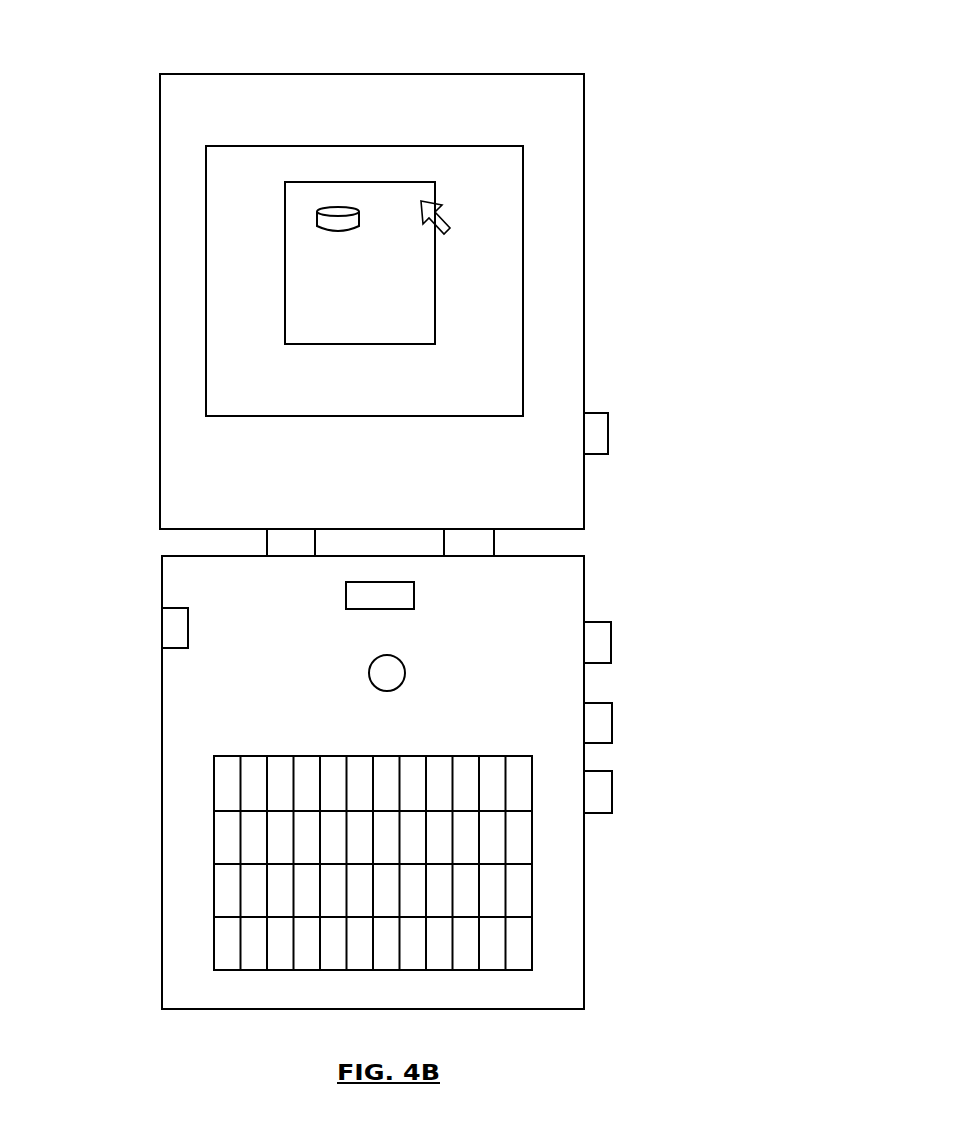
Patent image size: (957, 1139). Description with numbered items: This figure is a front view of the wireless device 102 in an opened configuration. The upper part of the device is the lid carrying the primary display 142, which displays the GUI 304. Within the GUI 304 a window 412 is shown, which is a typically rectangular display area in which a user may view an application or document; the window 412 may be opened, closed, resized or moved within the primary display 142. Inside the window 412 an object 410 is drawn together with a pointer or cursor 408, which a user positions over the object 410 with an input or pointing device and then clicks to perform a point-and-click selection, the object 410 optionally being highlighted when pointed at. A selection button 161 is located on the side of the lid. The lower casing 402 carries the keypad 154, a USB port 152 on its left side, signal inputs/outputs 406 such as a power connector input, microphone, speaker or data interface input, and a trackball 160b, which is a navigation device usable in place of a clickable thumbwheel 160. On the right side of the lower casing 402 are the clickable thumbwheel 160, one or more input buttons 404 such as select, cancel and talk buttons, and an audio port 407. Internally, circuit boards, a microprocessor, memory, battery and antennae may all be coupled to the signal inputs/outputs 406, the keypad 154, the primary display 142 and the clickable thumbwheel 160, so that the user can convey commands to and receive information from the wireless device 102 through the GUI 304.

The wireless device 102 is at (655, 77).
The primary display 142 is at (203, 181).
The GUI 304 is at (217, 207).
The window 412 is at (403, 193).
The object 410 is at (317, 220).
The pointer or cursor 408 is at (449, 235).
The selection button 161 is at (610, 435).
The signal inputs/outputs 406 is at (385, 582).
The USB port 152 is at (175, 628).
The clickable thumbwheel 160 is at (613, 643).
The trackball 160b is at (405, 665).
The lower casing 402 is at (178, 752).
The input buttons 404 is at (613, 723).
The audio port 407 is at (613, 790).
The keypad 154 is at (532, 901).